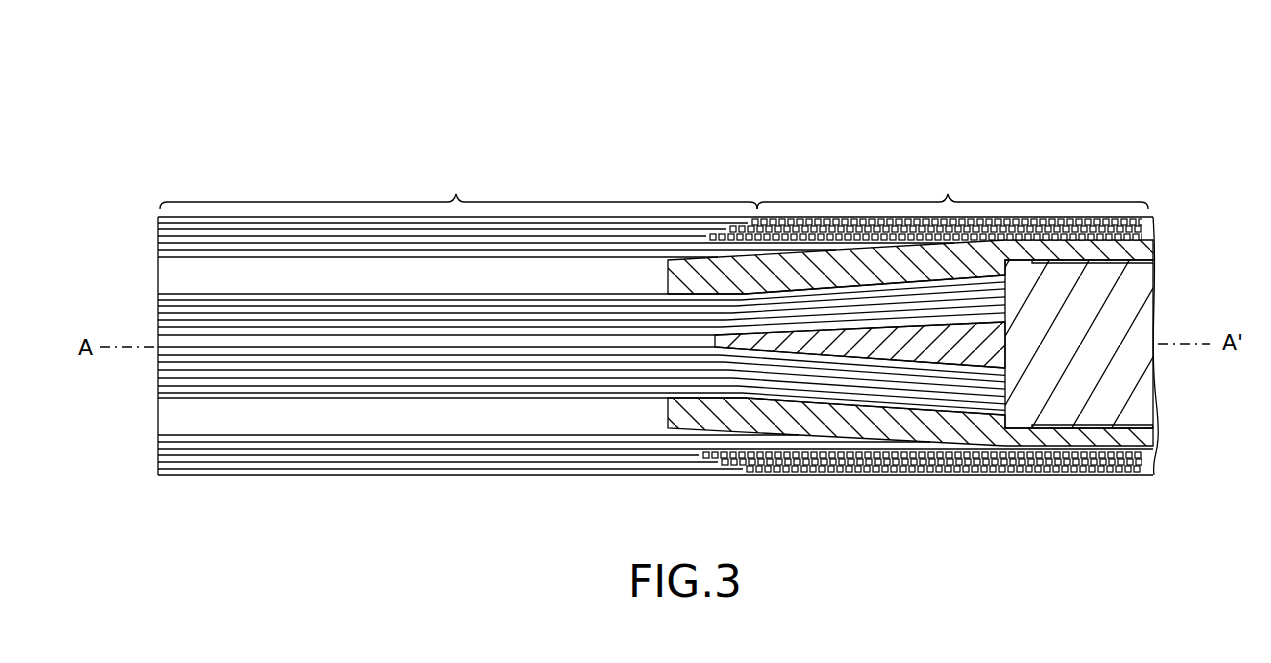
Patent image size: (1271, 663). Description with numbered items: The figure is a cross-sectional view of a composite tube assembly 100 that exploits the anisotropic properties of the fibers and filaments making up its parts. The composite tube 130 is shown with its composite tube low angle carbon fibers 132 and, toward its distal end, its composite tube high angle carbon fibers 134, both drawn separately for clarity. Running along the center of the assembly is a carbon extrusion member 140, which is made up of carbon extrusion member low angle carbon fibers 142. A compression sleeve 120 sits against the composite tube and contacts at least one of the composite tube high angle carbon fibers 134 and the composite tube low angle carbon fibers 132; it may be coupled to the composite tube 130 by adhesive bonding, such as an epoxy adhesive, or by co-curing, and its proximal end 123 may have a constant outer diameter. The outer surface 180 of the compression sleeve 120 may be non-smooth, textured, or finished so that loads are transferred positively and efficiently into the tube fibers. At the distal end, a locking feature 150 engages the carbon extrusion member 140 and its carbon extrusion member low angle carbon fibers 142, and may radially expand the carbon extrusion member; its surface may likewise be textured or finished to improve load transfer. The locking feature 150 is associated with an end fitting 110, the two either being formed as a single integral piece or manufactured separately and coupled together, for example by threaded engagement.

The composite tube assembly 100 is at (818, 104).
The end fitting 110 is at (1138, 300).
The compression sleeve 120 is at (765, 413).
The proximal end 123 is at (668, 268).
The composite tube 130 is at (178, 240).
The composite tube low angle carbon fibers 132 is at (458, 187).
The composite tube high angle carbon fibers 134 is at (952, 187).
The carbon extrusion member 140 is at (157, 312).
The carbon extrusion member low angle carbon fibers 142 is at (162, 335).
The locking feature 150 is at (943, 350).
The outer surface 180 is at (1027, 240).